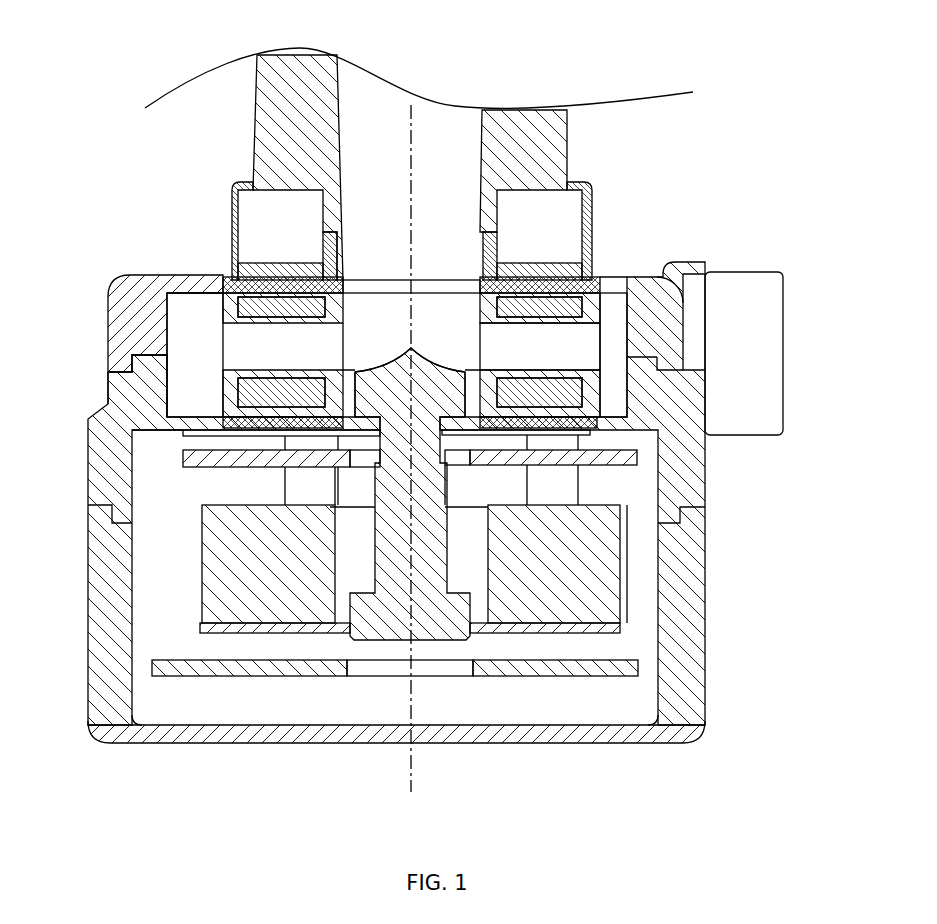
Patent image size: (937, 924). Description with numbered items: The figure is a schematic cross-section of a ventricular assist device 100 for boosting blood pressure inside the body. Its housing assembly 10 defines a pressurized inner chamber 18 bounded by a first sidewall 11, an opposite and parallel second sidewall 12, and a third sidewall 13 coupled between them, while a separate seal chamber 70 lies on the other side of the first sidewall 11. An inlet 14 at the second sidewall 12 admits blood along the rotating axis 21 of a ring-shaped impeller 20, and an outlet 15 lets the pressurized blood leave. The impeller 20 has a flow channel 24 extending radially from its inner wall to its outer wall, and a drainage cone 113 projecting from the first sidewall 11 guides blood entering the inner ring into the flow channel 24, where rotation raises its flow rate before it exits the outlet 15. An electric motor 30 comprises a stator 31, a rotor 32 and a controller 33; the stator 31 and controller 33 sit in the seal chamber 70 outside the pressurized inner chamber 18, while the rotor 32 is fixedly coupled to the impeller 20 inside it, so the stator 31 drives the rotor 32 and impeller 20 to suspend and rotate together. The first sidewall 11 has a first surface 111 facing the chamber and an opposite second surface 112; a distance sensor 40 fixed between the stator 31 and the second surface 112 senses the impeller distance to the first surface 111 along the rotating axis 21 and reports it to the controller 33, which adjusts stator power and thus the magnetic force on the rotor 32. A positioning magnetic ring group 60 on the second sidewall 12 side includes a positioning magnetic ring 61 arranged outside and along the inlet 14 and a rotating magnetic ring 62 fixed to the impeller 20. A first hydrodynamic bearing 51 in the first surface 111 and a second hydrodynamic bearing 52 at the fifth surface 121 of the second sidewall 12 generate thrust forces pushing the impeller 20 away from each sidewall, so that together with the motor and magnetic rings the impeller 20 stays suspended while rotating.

The ventricular assist device 100 is at (742, 124).
The inlet 14 is at (447, 192).
The second hydrodynamic bearing 52 is at (230, 268).
The positioning magnetic ring 61 is at (485, 272).
The impeller 20 is at (188, 303).
The housing assembly 10 is at (128, 332).
The third sidewall 13 is at (162, 368).
The pressurized inner chamber 18 is at (168, 294).
The flow channel 24 is at (237, 356).
The electric motor 30 is at (772, 493).
The rotor 32 is at (597, 428).
The seal chamber 70 is at (613, 700).
The controller 33 is at (503, 677).
The stator 31 is at (587, 587).
The positioning magnetic ring group 60 is at (422, 290).
The rotating magnetic ring 62 is at (400, 296).
The drainage cone 113 is at (377, 390).
The first sidewall 11 is at (200, 438).
The first hydrodynamic bearing 51 is at (250, 448).
The distance sensor 40 is at (588, 458).
The first surface 111 is at (186, 413).
The second surface 112 is at (176, 434).
The second sidewall 12 is at (607, 292).
The fifth surface 121 is at (612, 300).
The outlet 15 is at (737, 306).
The rotating axis 21 is at (410, 756).